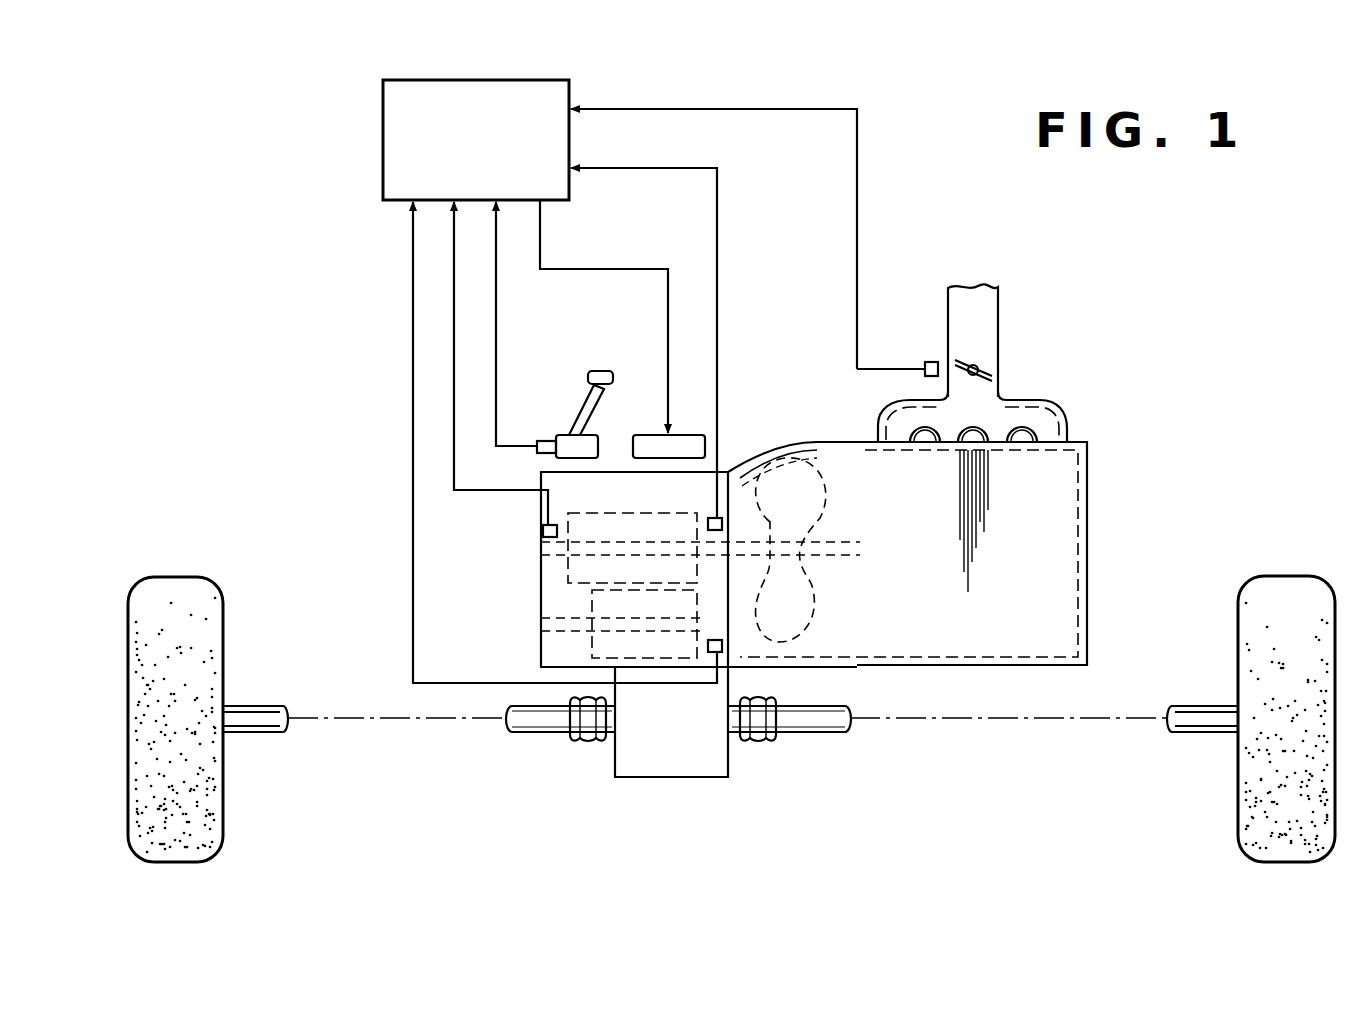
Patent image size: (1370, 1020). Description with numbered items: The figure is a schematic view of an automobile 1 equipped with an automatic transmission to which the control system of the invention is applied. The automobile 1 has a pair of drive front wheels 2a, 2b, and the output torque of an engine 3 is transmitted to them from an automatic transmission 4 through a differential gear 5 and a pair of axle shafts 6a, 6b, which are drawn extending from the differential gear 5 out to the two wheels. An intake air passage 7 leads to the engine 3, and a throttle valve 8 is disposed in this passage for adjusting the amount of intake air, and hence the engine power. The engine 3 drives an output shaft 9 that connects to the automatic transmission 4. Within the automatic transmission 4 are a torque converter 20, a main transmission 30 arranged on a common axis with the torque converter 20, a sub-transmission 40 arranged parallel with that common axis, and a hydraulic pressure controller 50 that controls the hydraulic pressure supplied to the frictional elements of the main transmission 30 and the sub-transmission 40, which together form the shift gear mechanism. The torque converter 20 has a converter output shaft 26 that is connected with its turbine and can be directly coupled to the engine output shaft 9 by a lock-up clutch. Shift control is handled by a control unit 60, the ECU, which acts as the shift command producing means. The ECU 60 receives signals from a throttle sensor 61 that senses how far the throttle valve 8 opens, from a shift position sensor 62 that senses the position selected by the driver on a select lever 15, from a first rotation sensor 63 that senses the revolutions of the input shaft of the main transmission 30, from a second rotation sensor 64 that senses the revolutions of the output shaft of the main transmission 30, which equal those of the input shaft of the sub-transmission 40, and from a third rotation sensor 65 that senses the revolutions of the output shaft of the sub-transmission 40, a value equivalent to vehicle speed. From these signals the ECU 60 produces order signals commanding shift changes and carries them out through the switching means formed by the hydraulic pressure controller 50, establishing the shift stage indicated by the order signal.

The automobile 1 is at (1032, 356).
The drive front wheel 2a is at (212, 832).
The drive front wheel 2b is at (1248, 828).
The engine 3 is at (1070, 528).
The automatic transmission 4 is at (731, 468).
The differential gear 5 is at (688, 776).
The axle shaft 6a is at (543, 735).
The axle shaft 6b is at (828, 735).
The intake air passage 7 is at (984, 318).
The throttle valve 8 is at (995, 368).
The output shaft 9 is at (837, 557).
The select lever 15 is at (586, 405).
The torque converter 20 is at (815, 542).
The converter output shaft 26 is at (715, 552).
The main transmission 30 is at (600, 513).
The sub-transmission 40 is at (592, 638).
The hydraulic pressure controller 50 is at (653, 440).
The control unit 60 is at (383, 143).
The throttle sensor 61 is at (931, 362).
The shift position sensor 62 is at (548, 441).
The first rotation sensor 63 is at (708, 524).
The second rotation sensor 64 is at (543, 532).
The third rotation sensor 65 is at (708, 648).